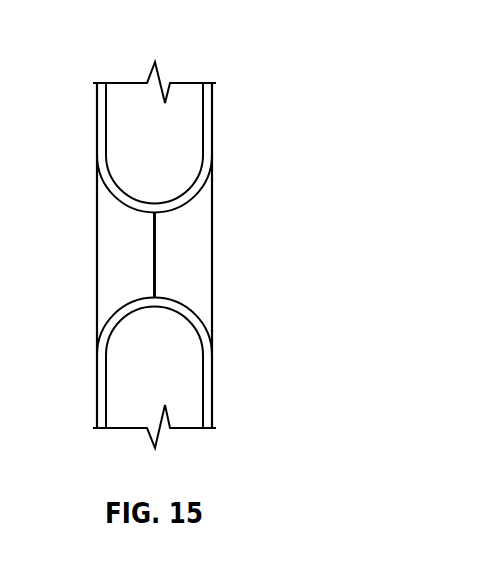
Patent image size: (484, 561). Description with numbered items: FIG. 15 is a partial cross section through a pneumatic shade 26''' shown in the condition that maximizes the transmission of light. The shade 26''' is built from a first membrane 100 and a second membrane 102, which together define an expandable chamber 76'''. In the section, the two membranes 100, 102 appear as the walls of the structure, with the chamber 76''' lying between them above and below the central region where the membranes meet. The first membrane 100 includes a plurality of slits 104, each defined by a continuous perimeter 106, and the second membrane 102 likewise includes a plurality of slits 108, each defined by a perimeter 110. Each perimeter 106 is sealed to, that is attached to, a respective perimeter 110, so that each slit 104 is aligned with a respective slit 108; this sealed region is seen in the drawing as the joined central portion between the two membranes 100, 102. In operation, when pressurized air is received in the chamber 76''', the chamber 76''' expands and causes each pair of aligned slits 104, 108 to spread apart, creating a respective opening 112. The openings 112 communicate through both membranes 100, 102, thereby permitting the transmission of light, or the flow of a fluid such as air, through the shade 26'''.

The pneumatic shade 26''' is at (274, 58).
The expandable chamber 76''' is at (154, 255).
The first membrane 100 is at (97, 165).
The second membrane 102 is at (212, 143).
The slits 104 is at (155, 242).
The continuous perimeter 106 is at (155, 283).
The slits 108 is at (155, 242).
The perimeter 110 is at (155, 270).
The openings 112 is at (183, 282).